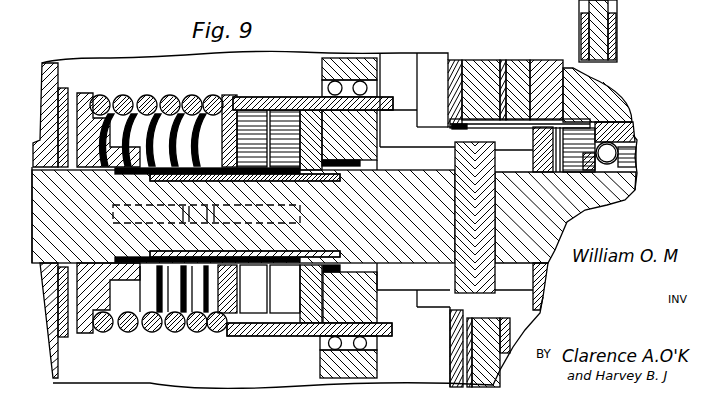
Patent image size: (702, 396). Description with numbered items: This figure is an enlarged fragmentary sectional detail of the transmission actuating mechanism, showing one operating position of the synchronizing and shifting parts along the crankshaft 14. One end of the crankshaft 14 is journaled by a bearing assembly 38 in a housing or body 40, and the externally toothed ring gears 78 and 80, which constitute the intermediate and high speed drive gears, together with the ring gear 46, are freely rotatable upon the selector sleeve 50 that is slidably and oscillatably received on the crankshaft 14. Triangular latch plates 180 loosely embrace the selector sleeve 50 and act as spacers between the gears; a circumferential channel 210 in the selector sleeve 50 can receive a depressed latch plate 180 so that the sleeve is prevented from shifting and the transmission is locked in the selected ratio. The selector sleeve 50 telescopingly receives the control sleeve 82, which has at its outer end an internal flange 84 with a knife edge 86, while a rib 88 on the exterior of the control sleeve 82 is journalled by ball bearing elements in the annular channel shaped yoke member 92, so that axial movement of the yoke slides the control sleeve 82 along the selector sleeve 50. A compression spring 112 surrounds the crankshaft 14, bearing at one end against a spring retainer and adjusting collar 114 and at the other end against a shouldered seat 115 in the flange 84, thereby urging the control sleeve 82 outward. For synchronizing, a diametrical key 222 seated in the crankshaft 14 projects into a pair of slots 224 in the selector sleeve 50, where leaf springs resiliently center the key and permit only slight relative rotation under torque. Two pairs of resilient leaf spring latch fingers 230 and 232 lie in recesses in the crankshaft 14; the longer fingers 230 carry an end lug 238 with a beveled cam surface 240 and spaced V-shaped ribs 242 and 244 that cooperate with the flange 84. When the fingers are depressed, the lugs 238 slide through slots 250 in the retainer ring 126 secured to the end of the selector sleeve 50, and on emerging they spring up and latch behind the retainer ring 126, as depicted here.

The crankshaft 14 is at (57, 267).
The bearing assembly 38 is at (640, 152).
The housing or body 40 is at (597, 113).
The ring gear 46 is at (585, 80).
The selector sleeve 50 is at (343, 128).
The intermediate speed ring gear 78 is at (485, 78).
The high speed ring gear 80 is at (515, 84).
The control sleeve 82 is at (243, 338).
The internal flange 84 is at (234, 150).
The knife edge 86 is at (232, 286).
The rib or ridge 88 is at (382, 96).
The yoke member 92 is at (340, 62).
The compression spring 112 is at (160, 98).
The spring retainer and adjusting collar 114 is at (90, 326).
The shouldered seat 115 is at (222, 100).
The retainer ring 126 is at (317, 312).
The latch plate 180 is at (455, 70).
The channel 210 is at (468, 129).
The key 222 is at (463, 272).
The slots 224 is at (438, 162).
The leaf spring latch fingers 230 is at (343, 188).
The leaf spring latch fingers 232 is at (130, 215).
The lug 238 is at (338, 173).
The beveled cam surface 240 is at (333, 275).
The rib 242 is at (212, 176).
The rib 244 is at (246, 179).
The slots 250 is at (301, 181).